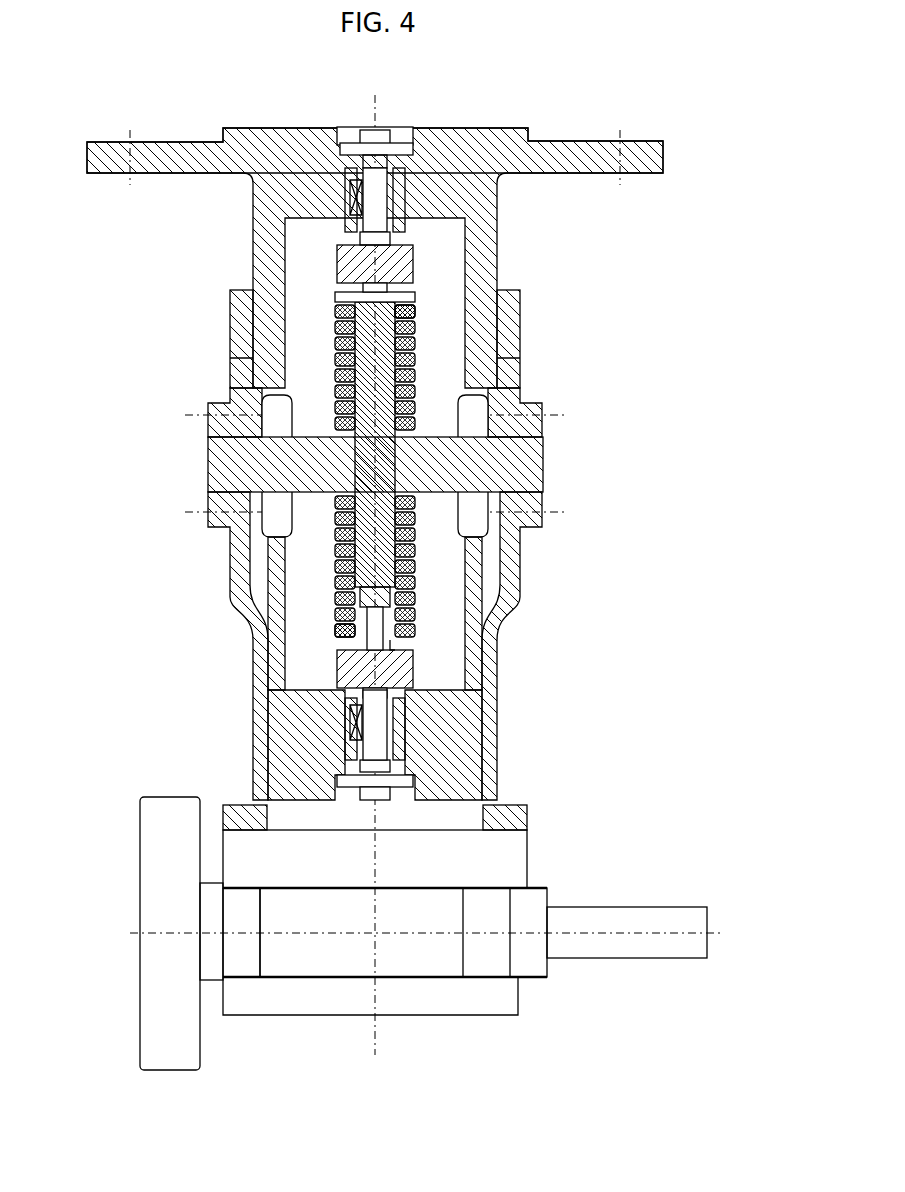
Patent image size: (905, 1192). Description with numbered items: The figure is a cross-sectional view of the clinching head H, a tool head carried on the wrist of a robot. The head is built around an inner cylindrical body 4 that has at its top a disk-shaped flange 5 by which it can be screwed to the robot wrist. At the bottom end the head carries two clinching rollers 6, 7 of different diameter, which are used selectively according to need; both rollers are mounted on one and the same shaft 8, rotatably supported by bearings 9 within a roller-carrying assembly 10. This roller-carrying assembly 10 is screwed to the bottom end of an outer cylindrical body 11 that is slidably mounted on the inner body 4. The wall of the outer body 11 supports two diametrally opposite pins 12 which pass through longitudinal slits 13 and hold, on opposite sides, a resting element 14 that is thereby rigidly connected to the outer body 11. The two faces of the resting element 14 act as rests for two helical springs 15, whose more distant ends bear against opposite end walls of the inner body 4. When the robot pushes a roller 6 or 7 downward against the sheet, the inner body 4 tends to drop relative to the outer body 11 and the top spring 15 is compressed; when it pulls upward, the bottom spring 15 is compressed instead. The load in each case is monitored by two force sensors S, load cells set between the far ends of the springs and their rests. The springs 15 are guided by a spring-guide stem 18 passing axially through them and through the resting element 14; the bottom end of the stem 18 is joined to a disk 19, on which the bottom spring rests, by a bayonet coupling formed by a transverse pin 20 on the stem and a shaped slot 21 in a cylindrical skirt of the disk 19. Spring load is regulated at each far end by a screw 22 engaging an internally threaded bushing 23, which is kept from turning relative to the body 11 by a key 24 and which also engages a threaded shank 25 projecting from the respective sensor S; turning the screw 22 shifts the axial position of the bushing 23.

The inner cylindrical body 4 is at (501, 246).
The disk-shaped flange 5 is at (558, 140).
The clinching roller 6 is at (162, 1030).
The clinching roller 7 is at (650, 950).
The shaft 8 is at (318, 955).
The bearings 9 is at (245, 1000).
The roller-carrying assembly 10 is at (430, 1020).
The outer cylindrical body 11 is at (505, 700).
The pins 12 is at (222, 478).
The longitudinal slits 13 is at (252, 530).
The resting element 14 is at (422, 438).
The helical springs 15 is at (345, 393).
The spring-guide stem 18 is at (410, 340).
The disk 19 is at (340, 643).
The transverse pin 20 is at (396, 580).
The shaped slot 21 is at (345, 598).
The screw 22 is at (362, 141).
The internally threaded bushing 23 is at (355, 238).
The key 24 is at (350, 722).
The threaded shank 25 is at (400, 680).
The force sensors S is at (347, 263).
The clinching head H is at (613, 398).